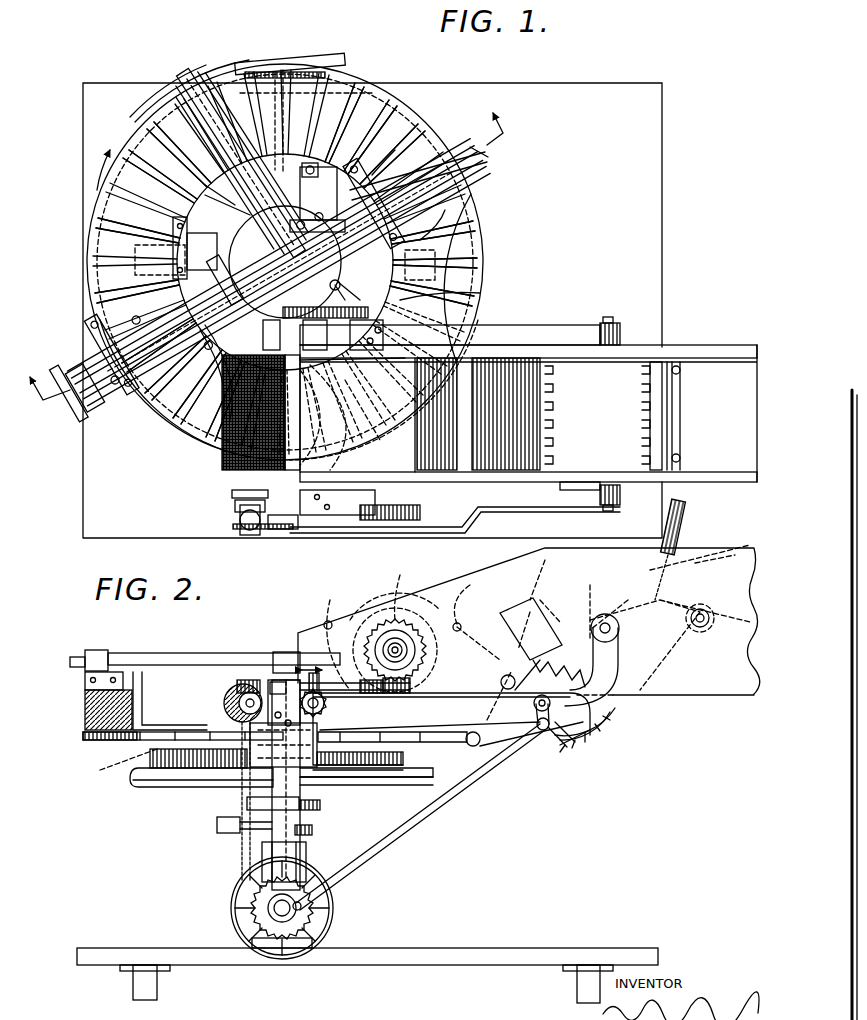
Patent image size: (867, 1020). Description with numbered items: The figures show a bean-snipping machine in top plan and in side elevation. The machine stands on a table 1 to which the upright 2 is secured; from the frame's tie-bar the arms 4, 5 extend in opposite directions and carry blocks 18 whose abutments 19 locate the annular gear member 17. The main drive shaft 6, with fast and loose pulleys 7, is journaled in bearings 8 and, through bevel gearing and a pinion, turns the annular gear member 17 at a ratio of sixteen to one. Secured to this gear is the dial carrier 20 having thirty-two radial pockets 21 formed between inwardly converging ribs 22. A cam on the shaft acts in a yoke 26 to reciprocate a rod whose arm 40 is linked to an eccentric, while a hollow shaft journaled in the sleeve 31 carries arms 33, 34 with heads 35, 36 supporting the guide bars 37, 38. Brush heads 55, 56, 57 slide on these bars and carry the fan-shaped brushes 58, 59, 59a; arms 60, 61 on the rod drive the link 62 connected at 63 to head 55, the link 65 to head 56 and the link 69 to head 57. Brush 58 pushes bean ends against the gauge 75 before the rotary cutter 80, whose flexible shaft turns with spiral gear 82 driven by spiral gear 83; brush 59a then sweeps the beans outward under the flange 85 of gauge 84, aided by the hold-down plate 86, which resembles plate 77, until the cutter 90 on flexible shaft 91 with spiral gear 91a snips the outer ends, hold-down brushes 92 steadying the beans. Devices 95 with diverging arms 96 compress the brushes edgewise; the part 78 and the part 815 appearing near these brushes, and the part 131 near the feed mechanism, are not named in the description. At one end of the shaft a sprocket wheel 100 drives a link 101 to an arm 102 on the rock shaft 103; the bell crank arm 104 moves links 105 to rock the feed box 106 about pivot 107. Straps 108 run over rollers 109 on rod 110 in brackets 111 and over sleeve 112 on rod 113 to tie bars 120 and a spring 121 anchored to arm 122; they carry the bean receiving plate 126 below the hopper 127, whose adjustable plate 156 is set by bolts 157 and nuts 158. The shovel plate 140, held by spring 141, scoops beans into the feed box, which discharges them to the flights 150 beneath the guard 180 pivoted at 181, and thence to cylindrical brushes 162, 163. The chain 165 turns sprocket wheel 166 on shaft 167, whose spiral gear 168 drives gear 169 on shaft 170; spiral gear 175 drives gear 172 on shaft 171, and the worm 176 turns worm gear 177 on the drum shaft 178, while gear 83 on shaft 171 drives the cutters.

In FIG. 1, the table 1 is at (85, 512).
In FIG. 2, the table 1 is at (108, 948).
In FIG. 2, the upright 2 is at (302, 830).
In FIG. 1, the arm 4 is at (485, 272).
In FIG. 2, the arm 4 is at (165, 786).
In FIG. 2, the arm 5 is at (390, 778).
In FIG. 2, the main or drive shaft 6 is at (270, 907).
In FIG. 1, the fast and loose pulleys 7 is at (272, 267).
In FIG. 2, the fast and loose pulleys 7 is at (320, 905).
In FIG. 1, the bearings 8 is at (340, 150).
In FIG. 1, the annular gear member 17 is at (490, 330).
In FIG. 2, the annular gear member 17 is at (210, 766).
In FIG. 2, the blocks 18 is at (136, 780).
In FIG. 2, the projections or abutments 19 is at (110, 770).
In FIG. 1, the annular or dial carrier 20 is at (212, 440).
In FIG. 2, the annular or dial carrier 20 is at (105, 742).
In FIG. 1, the pockets 21 is at (480, 255).
In FIG. 1, the ribs 22 is at (470, 222).
In FIG. 2, the yoke or guide 26 is at (306, 852).
In FIG. 2, the sleeve-like member 31 is at (262, 806).
In FIG. 1, the arm 33 is at (317, 225).
In FIG. 1, the arm 34 is at (230, 196).
In FIG. 1, the head 35 is at (176, 418).
In FIG. 1, the head 36 is at (244, 80).
In FIG. 1, the guide bar 37 is at (472, 147).
In FIG. 1, the guide bar 38 is at (222, 66).
In FIG. 2, the arm 40 is at (235, 827).
In FIG. 1, the brush supporting head 55 is at (88, 386).
In FIG. 2, the brush supporting head 55 is at (96, 650).
In FIG. 1, the brush supporting head 56 is at (460, 188).
In FIG. 1, the brush supporting head 57 is at (200, 76).
In FIG. 1, the brush 58 is at (96, 330).
In FIG. 1, the brush 59 is at (490, 226).
In FIG. 1, the brush 59a is at (283, 62).
In FIG. 1, the arm 60 is at (218, 360).
In FIG. 1, the arm 61 is at (345, 293).
In FIG. 1, the link 62 is at (200, 430).
In FIG. 1, the connection 63 is at (115, 384).
In FIG. 1, the link 65 is at (358, 250).
In FIG. 1, the link 69 is at (330, 160).
In FIG. 1, the gauge 75 is at (230, 294).
In FIG. 1, the hold-down plate 77 is at (148, 396).
In FIG. 1, the plate 78 is at (132, 306).
In FIG. 2, the plate 78 is at (138, 672).
In FIG. 1, the rotary cutter 80 is at (178, 202).
In FIG. 1, the spiral gear 82 is at (410, 290).
In FIG. 1, the spiral gear 83 is at (330, 380).
In FIG. 1, the gauge 84 is at (160, 105).
In FIG. 1, the flange 85 is at (152, 118).
In FIG. 1, the hold-down plate 86 is at (150, 136).
In FIG. 1, the rotary cutter 90 is at (342, 62).
In FIG. 1, the flexible shaft 91 is at (366, 92).
In FIG. 1, the spiral gear 91a is at (400, 306).
In FIG. 1, the hold-down brushes 92 is at (308, 60).
In FIG. 1, the devices 95 is at (205, 186).
In FIG. 1, the arms 96 is at (180, 165).
In FIG. 1, the sprocket wheel 100 is at (255, 546).
In FIG. 2, the sprocket wheel 100 is at (326, 920).
In FIG. 1, the link 101 is at (520, 514).
In FIG. 2, the link 101 is at (398, 838).
In FIG. 2, the arm 102 is at (544, 731).
In FIG. 2, the rock shaft 103 is at (592, 731).
In FIG. 2, the arm 104 is at (472, 748).
In FIG. 2, the links 105 is at (504, 680).
In FIG. 1, the bean feeding or delivery box 106 is at (530, 405).
In FIG. 2, the bean feeding or delivery box 106 is at (536, 612).
In FIG. 2, the pivot 107 is at (470, 622).
In FIG. 2, the leather belts or straps 108 is at (660, 615).
In FIG. 2, the rollers 109 is at (559, 673).
In FIG. 1, the stationary rod 110 is at (607, 508).
In FIG. 2, the stationary rod 110 is at (615, 632).
In FIG. 1, the brackets 111 is at (570, 340).
In FIG. 2, the brackets 111 is at (600, 662).
In FIG. 2, the rotatable sleeve 112 is at (708, 622).
In FIG. 2, the rod 113 is at (704, 626).
In FIG. 2, the tie bars 120 is at (660, 698).
In FIG. 2, the spring 121 is at (606, 712).
In FIG. 2, the arm 122 is at (562, 742).
In FIG. 2, the bean receiving plate 126 is at (540, 625).
In FIG. 2, the hopper 127 is at (714, 556).
In FIG. 2, the link 131 is at (628, 600).
In FIG. 1, the plate 140 is at (623, 416).
In FIG. 2, the plate 140 is at (593, 599).
In FIG. 2, the coiled spring 141 is at (610, 716).
In FIG. 2, the flights 150 is at (470, 586).
In FIG. 2, the adjustable plate 156 is at (675, 565).
In FIG. 1, the screw threaded bolts 157 is at (680, 371).
In FIG. 1, the nuts 158 is at (681, 456).
In FIG. 1, the cylindrical brush 162 is at (245, 492).
In FIG. 2, the cylindrical brush 162 is at (322, 795).
In FIG. 1, the cylindrical brush 163 is at (238, 476).
In FIG. 2, the cylindrical brush 163 is at (238, 698).
In FIG. 2, the sprocket chain 165 is at (243, 850).
In FIG. 2, the sprocket wheel 166 is at (266, 690).
In FIG. 2, the shaft 167 is at (270, 686).
In FIG. 2, the spiral gear 168 is at (225, 707).
In FIG. 1, the spiral gear 169 is at (240, 516).
In FIG. 2, the spiral gear 169 is at (278, 682).
In FIG. 1, the shaft 170 is at (350, 516).
In FIG. 2, the shaft 170 is at (291, 652).
In FIG. 2, the shaft 171 is at (328, 714).
In FIG. 2, the spiral gear 172 is at (326, 702).
In FIG. 1, the spiral gear 175 is at (296, 530).
In FIG. 2, the spiral gear 175 is at (312, 673).
In FIG. 2, the worm 176 is at (410, 712).
In FIG. 1, the worm gear 177 is at (420, 515).
In FIG. 2, the worm gear 177 is at (400, 578).
In FIG. 2, the shaft 178 is at (398, 648).
In FIG. 1, the curved guard 180 is at (380, 430).
In FIG. 2, the curved guard 180 is at (382, 600).
In FIG. 1, the pivot 181 is at (342, 445).
In FIG. 2, the pivot 181 is at (326, 600).
In FIG. 1, the block 815 is at (245, 252).